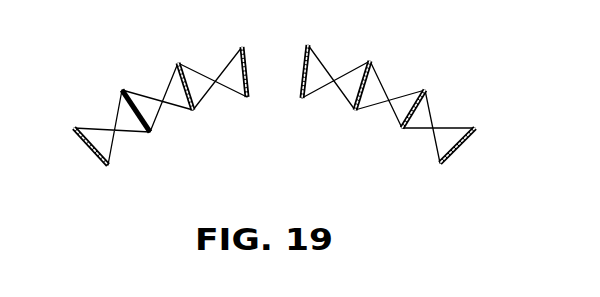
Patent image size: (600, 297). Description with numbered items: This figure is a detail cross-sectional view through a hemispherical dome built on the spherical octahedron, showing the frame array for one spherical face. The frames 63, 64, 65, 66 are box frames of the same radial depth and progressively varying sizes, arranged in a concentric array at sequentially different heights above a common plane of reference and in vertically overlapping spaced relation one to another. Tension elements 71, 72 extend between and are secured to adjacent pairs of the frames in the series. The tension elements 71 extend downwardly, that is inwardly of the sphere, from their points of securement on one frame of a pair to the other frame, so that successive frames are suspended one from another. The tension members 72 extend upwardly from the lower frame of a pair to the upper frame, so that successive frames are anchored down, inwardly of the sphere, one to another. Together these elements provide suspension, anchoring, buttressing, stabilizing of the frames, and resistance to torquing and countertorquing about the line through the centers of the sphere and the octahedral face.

The frame 63 is at (438, 158).
The frame 64 is at (398, 127).
The frame 65 is at (356, 100).
The frame 66 is at (300, 88).
The tension element 71 is at (84, 129).
The tension member 72 is at (117, 97).